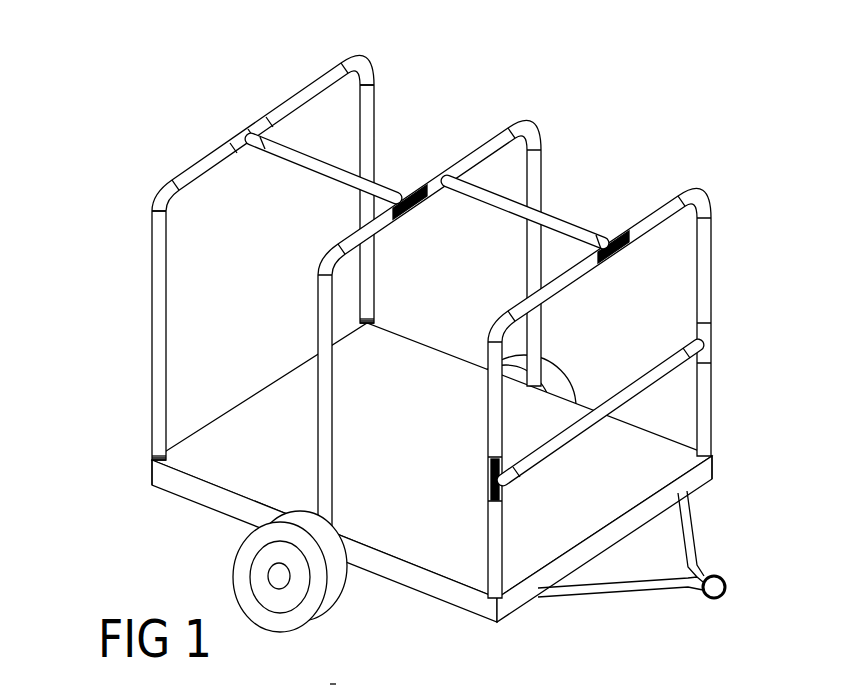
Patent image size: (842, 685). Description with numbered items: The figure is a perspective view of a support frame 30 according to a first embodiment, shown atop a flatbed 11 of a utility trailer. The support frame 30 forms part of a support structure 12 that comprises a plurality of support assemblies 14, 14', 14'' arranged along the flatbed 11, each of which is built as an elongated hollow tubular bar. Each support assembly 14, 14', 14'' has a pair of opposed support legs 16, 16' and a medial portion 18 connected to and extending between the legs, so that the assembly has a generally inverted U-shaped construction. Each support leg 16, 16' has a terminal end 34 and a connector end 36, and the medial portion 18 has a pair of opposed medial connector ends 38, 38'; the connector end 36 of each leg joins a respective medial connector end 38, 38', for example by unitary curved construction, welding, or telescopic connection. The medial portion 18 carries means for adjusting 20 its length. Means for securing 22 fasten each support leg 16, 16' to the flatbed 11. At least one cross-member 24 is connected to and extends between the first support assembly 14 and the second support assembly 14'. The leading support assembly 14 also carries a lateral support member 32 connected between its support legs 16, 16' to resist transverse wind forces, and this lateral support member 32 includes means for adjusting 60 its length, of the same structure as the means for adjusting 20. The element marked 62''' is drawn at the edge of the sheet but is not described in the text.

The flatbed 11 is at (203, 508).
The support structure 12 is at (100, 283).
The support assembly 14 is at (228, 272).
The second support assembly 14' is at (465, 325).
The support assembly 14'' is at (634, 393).
The support leg 16 is at (129, 328).
The support leg 16' is at (410, 202).
The medial portion 18 is at (207, 153).
The means for adjusting 20 is at (267, 110).
The means for securing 22 is at (152, 460).
The cross-member 24 is at (381, 188).
The support frame 30 is at (640, 147).
The lateral support member 32 is at (663, 358).
The terminal end 34 is at (153, 455).
The connector end 36 is at (152, 212).
The medial connector end 38 is at (150, 152).
The medial connector end 38' is at (305, 54).
The means for adjusting 60 is at (640, 388).
The wheel 62''' is at (393, 676).